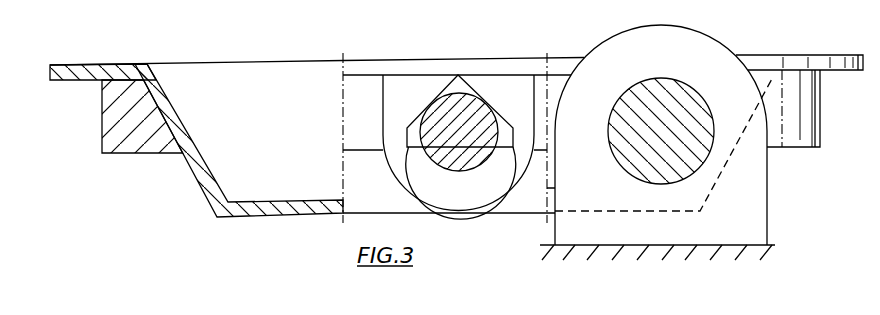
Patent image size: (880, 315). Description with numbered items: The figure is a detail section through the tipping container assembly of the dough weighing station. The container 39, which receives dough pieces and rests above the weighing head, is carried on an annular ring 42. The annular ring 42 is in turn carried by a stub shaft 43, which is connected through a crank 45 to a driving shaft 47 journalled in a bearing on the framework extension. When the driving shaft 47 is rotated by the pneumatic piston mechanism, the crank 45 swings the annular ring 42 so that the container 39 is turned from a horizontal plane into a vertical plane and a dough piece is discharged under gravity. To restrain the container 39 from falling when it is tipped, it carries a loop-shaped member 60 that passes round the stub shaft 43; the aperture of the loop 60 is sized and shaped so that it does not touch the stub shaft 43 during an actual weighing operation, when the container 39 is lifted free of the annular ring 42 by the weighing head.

The container 39 is at (90, 64).
The annular ring 42 is at (102, 125).
The stub shaft 43 is at (472, 122).
The crank 45 is at (556, 82).
The driving shaft 47 is at (678, 110).
The loop-shaped member 60 is at (392, 106).